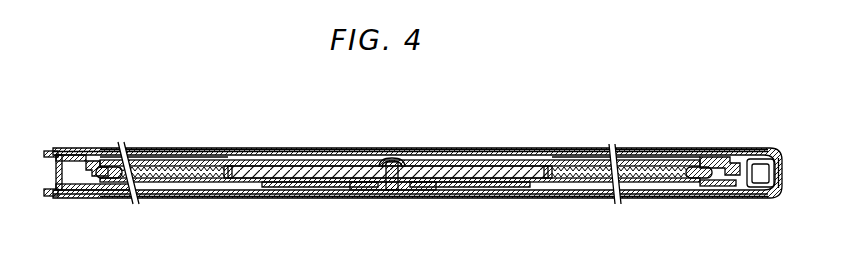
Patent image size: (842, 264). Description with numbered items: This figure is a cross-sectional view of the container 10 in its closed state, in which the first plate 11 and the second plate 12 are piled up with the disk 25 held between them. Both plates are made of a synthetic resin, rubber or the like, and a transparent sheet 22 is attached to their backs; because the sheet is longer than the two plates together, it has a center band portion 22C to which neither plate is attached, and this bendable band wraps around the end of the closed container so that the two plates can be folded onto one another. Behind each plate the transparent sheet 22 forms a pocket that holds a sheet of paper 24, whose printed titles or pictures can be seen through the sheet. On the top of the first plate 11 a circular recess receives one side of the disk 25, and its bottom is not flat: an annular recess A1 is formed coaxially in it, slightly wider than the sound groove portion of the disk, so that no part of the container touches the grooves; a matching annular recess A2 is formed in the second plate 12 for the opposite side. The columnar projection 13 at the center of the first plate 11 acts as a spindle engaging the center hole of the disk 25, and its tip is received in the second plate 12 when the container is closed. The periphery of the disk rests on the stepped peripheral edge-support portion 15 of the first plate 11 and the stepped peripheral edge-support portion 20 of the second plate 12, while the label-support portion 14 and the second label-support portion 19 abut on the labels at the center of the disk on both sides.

The container 10 is at (685, 86).
The first plate 11 is at (48, 196).
The second plate 12 is at (48, 151).
The columnar projection 13 is at (392, 191).
The label-support portion 14 is at (312, 186).
The peripheral edge-support portion 15 is at (96, 192).
The second label-support portion 19 is at (278, 162).
The peripheral edge-support portion 20 is at (100, 161).
The transparent sheet 22 is at (513, 149).
The center band portion 22C is at (783, 188).
The sheet of paper 24 is at (358, 150).
The disk 25 is at (200, 172).
The first annular recess A1 is at (170, 186).
The second annular recess A2 is at (163, 157).